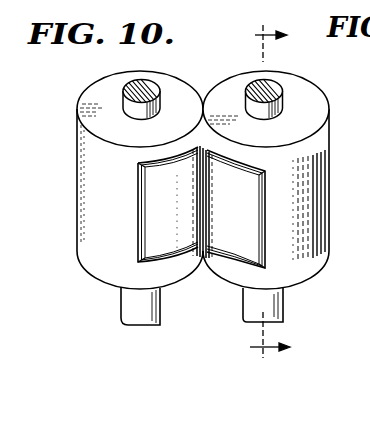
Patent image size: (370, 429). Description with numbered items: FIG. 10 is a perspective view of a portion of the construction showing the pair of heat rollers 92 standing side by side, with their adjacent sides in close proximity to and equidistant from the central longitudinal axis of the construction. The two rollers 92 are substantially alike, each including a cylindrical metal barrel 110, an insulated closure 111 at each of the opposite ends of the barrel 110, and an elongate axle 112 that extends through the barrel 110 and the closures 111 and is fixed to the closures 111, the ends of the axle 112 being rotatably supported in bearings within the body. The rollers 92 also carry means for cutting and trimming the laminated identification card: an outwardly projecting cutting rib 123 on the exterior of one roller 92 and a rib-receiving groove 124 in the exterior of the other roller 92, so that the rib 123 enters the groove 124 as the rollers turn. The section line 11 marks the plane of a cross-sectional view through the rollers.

The section line 11- 11 is at (258, 191).
The heat roller 92 is at (80, 97).
The cylindrical metal barrel 110 is at (82, 183).
The insulated closure 111 is at (310, 124).
The axle 112 is at (150, 110).
The cutting rib 123 is at (139, 218).
The rib-receiving groove 124 is at (257, 175).